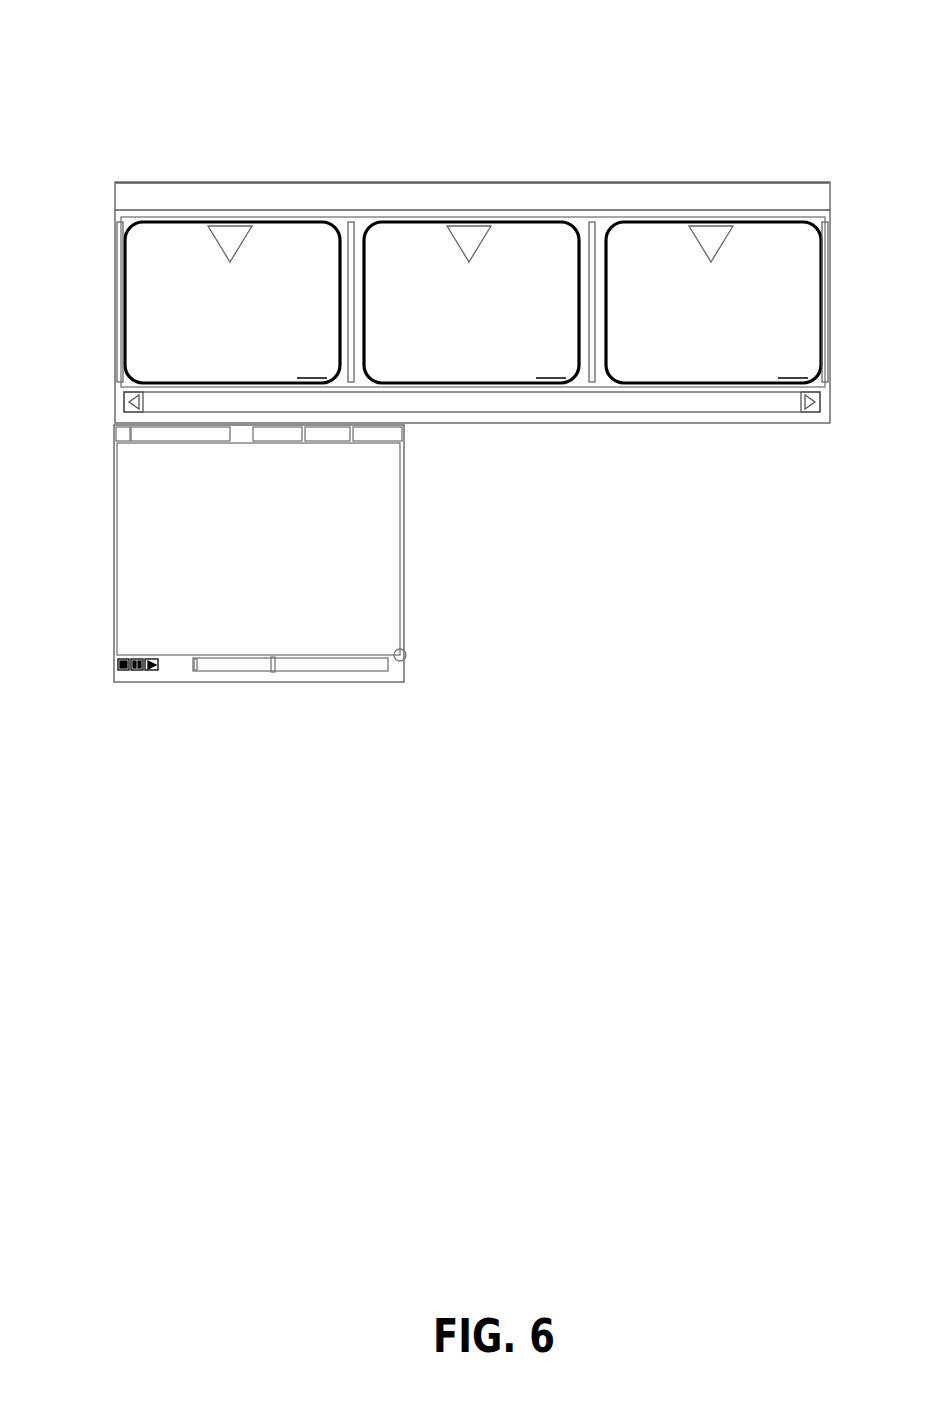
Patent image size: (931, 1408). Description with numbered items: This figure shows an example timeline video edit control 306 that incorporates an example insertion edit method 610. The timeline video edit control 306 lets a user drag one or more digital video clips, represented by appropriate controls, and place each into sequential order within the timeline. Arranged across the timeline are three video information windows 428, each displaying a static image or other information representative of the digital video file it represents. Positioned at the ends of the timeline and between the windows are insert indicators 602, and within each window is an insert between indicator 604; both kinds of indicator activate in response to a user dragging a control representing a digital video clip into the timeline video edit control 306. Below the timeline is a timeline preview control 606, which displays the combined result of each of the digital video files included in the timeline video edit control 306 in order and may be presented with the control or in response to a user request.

The timeline video edit control 306 is at (505, 59).
The insertion edit method 610 is at (500, 140).
The insert indicator 602 is at (781, 477).
The insert between indicator 604 is at (232, 243).
The video information window 428 is at (473, 302).
The timeline preview control 606 is at (572, 548).